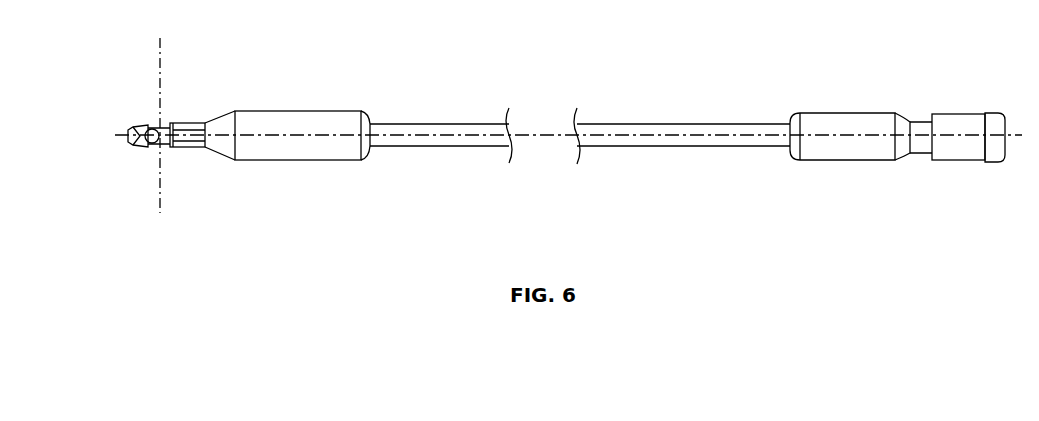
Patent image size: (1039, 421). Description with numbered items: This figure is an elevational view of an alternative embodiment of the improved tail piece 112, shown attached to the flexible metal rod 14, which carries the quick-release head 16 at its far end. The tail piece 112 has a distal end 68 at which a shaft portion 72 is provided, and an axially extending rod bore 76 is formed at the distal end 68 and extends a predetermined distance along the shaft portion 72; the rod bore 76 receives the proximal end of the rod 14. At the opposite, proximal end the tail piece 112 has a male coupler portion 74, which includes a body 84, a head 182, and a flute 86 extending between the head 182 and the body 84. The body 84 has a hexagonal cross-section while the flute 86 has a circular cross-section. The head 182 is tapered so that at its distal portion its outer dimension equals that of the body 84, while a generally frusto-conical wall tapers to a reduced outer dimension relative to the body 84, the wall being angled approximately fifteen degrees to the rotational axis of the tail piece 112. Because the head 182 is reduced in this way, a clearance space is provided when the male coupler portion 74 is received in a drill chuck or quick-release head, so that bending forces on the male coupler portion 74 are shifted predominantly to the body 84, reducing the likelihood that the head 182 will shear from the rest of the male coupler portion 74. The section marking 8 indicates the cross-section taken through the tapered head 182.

The section line 8- 8 is at (194, 213).
The flexible metal rod 14 is at (450, 146).
The quick-release head 16 is at (842, 161).
The distal end 68 is at (369, 116).
The shaft portion 72 is at (325, 111).
The male coupler portion 74 is at (196, 116).
The rod bore 76 is at (370, 157).
The body 84 is at (186, 148).
The flute 86 is at (153, 158).
The tail piece 112 is at (293, 101).
The head 182 is at (134, 147).